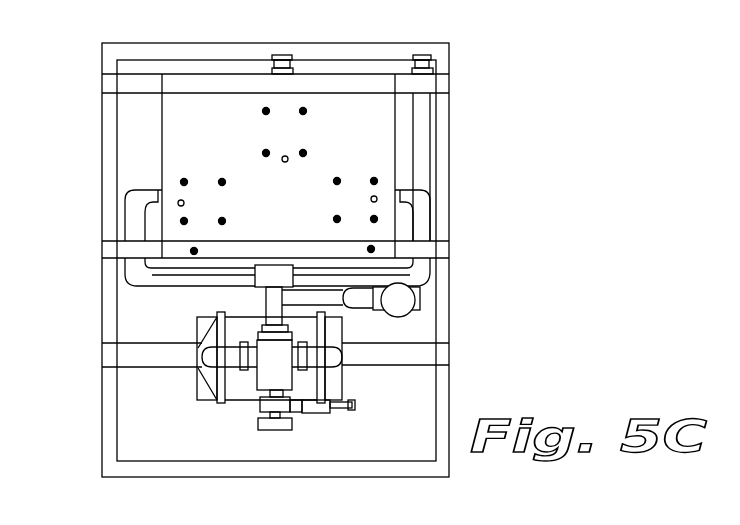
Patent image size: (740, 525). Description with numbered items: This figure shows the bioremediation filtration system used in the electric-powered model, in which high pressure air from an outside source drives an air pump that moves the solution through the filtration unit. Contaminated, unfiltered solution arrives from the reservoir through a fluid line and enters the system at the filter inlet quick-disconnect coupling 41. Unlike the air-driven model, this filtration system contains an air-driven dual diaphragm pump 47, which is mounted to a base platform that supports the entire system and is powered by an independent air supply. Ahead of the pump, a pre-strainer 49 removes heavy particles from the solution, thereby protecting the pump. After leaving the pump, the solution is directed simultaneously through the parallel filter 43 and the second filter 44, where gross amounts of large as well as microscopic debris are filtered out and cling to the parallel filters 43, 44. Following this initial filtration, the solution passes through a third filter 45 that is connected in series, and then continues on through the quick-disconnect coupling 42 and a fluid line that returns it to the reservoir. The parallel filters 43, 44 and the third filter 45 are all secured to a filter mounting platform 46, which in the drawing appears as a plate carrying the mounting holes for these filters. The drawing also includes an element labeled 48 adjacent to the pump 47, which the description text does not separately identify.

The filter inlet quick-disconnect coupling 41 is at (431, 56).
The quick-disconnect coupling 42 is at (296, 63).
The parallel filter 43 is at (355, 197).
The second filter 44 is at (207, 188).
The third filter 45 is at (290, 128).
The filter mounting platform 46 is at (370, 144).
The air-driven dual diaphragm pump 47 is at (204, 330).
The valve actuator 48 is at (257, 423).
The pre-strainer 49 is at (402, 300).